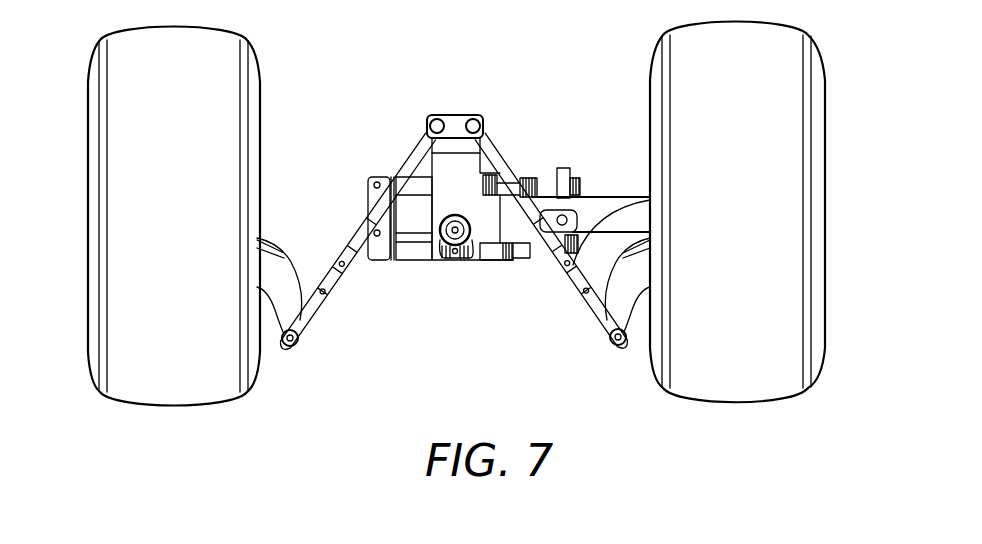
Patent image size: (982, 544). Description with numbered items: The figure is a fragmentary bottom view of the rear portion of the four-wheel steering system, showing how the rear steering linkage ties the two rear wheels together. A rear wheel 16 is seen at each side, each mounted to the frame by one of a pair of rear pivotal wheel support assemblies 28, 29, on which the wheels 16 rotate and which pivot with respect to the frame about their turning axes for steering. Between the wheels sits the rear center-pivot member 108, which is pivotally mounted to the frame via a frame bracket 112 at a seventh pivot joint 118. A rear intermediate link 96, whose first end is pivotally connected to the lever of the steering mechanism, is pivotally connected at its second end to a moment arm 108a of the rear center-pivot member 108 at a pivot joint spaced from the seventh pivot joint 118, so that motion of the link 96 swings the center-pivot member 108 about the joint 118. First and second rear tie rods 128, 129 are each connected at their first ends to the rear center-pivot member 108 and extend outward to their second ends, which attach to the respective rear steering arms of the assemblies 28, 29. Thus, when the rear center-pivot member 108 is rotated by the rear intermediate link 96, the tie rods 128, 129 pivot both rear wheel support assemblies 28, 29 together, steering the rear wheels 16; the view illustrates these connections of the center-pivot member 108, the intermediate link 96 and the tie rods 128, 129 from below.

The rear wheel 16 is at (225, 168).
The rear pivotal wheel support assembly 28 is at (298, 353).
The rear pivotal wheel support assembly 29 is at (614, 354).
The rear intermediate link 96 is at (577, 172).
The rear center-pivot member 108 is at (447, 175).
The moment arm 108a is at (530, 258).
The frame bracket 112 is at (403, 263).
The seventh pivot joint 118 is at (470, 263).
The first rear tie rod 128 is at (345, 263).
The second rear tie rod 129 is at (636, 212).